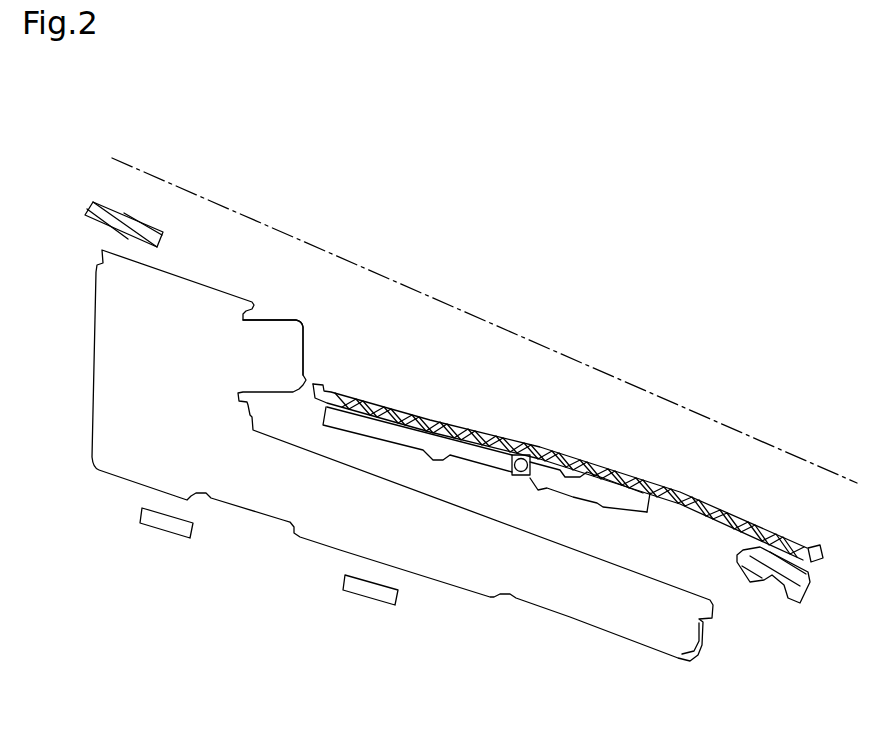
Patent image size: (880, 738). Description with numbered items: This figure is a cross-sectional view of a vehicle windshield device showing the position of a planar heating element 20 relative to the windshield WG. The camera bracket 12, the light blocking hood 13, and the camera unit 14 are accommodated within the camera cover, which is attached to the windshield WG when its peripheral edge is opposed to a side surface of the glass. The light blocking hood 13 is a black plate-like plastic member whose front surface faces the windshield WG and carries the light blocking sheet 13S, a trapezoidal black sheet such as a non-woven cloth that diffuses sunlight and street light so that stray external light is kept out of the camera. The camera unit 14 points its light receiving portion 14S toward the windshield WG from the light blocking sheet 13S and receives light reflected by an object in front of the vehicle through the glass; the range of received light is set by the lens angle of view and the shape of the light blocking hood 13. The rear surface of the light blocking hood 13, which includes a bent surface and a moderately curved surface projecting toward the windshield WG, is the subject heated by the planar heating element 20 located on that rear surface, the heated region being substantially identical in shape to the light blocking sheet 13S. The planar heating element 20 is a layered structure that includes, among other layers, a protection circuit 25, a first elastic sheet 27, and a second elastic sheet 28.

The camera bracket 12 is at (792, 604).
The light blocking hood 13 is at (812, 543).
The light blocking sheet 13S is at (548, 447).
The camera unit 14 is at (199, 282).
The light receiving portion 14S is at (275, 319).
The planar heating element 20 is at (632, 497).
The protection circuit 25 is at (522, 477).
The first elastic sheet 27 is at (577, 485).
The second elastic sheet 28 is at (465, 478).
The windshield WG is at (427, 296).